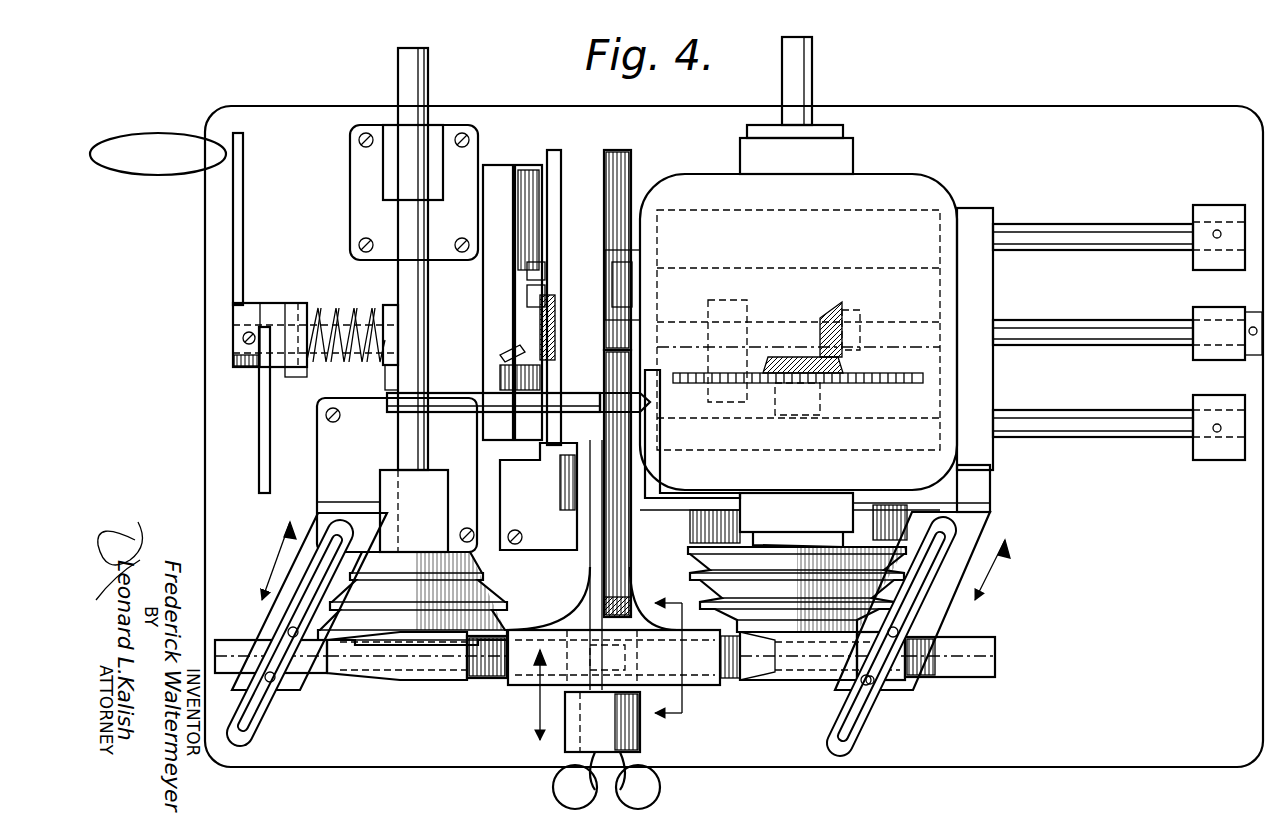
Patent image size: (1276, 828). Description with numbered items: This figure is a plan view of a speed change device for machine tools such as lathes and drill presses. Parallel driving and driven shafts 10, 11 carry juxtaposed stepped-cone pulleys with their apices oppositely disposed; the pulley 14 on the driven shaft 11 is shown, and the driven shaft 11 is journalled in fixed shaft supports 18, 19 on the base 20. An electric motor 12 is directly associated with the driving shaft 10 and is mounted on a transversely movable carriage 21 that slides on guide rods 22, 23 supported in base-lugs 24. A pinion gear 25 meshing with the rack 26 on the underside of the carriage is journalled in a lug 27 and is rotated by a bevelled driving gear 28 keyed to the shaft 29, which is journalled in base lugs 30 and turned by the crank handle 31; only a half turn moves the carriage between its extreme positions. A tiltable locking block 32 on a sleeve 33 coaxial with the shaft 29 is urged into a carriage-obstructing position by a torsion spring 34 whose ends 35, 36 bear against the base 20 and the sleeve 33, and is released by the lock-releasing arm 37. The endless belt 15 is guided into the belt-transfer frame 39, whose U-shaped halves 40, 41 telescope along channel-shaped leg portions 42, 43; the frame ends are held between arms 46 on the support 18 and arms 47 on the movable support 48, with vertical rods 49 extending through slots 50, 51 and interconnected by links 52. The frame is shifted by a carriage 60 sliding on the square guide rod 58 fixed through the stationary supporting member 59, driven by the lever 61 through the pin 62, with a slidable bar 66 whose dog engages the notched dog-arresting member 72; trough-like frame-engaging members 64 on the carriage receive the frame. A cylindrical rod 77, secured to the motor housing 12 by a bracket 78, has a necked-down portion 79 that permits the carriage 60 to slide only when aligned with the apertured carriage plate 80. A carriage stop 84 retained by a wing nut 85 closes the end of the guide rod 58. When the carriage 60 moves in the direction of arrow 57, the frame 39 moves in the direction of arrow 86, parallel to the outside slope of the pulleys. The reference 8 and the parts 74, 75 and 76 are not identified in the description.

The section line arrows 8 is at (677, 659).
The driving shaft 10 is at (780, 83).
The driven shaft 11 is at (405, 65).
The electric motor 12 is at (880, 187).
The stepped-cone pulley 14 is at (470, 608).
The endless belt 15 is at (700, 563).
The fixed shaft support 18 is at (385, 475).
The fixed shaft support 19 is at (400, 200).
The base 20 is at (320, 178).
The motor carriage 21 is at (985, 287).
The guide rod 22 is at (1118, 225).
The guide rod 23 is at (1100, 415).
The base-lug 24 is at (1215, 205).
The pinion gear 25 is at (790, 357).
The rack 26 is at (870, 375).
The lug 27 is at (830, 402).
The bevelled driving gear 28 is at (833, 302).
The rotatable shaft 29 is at (1093, 328).
The base lug 30 is at (1215, 320).
The crank handle 31 is at (158, 154).
The tiltable locking block 32 is at (712, 395).
The rotatable sleeve 33 is at (344, 347).
The coiled torsion spring 34 is at (360, 305).
The spring end 35 is at (385, 380).
The spring end 36 is at (299, 389).
The lock-releasing arm 37 is at (262, 468).
The belt-transfer frame 39 is at (442, 690).
The U-shaped frame half 40 is at (950, 657).
The U-shaped frame half 41 is at (271, 656).
The leg portions 42 is at (750, 685).
The leg portions 43 is at (487, 685).
The outwardly-projecting arms 46 is at (275, 720).
The outwardly-projecting arms 47 is at (870, 720).
The movable support 48 is at (992, 483).
The vertical rods 49 is at (290, 628).
The slot 50 is at (276, 682).
The slot 51 is at (872, 684).
The links 52 is at (300, 675).
The arrow 57 is at (545, 695).
The square guide rod 58 is at (618, 150).
The stationary supporting member 59 is at (567, 480).
The carriage 60 is at (590, 550).
The lever 61 is at (527, 272).
The pin 62 is at (527, 298).
The frame-engaging members 64 is at (624, 657).
The longitudinally slidable bar 66 is at (540, 325).
The dog-arresting member 72 is at (555, 150).
The block 74 is at (500, 378).
The pawl 75 is at (499, 344).
The plate 76 is at (490, 180).
The cylindrical rod 77 is at (445, 412).
The supporting bracket 78 is at (660, 475).
The necked-down portion 79 is at (630, 360).
The apertured carriage plate 80 is at (630, 520).
The carriage stop 84 is at (630, 725).
The wing nut 85 is at (660, 785).
The arrow 86 is at (636, 561).